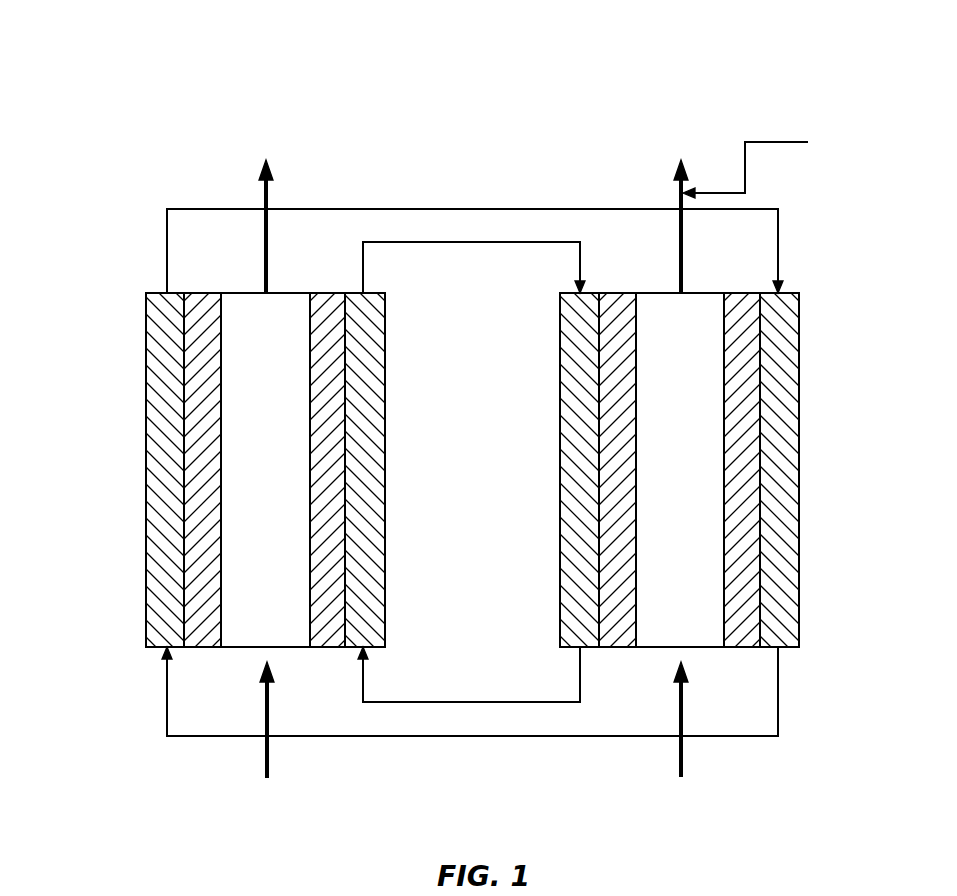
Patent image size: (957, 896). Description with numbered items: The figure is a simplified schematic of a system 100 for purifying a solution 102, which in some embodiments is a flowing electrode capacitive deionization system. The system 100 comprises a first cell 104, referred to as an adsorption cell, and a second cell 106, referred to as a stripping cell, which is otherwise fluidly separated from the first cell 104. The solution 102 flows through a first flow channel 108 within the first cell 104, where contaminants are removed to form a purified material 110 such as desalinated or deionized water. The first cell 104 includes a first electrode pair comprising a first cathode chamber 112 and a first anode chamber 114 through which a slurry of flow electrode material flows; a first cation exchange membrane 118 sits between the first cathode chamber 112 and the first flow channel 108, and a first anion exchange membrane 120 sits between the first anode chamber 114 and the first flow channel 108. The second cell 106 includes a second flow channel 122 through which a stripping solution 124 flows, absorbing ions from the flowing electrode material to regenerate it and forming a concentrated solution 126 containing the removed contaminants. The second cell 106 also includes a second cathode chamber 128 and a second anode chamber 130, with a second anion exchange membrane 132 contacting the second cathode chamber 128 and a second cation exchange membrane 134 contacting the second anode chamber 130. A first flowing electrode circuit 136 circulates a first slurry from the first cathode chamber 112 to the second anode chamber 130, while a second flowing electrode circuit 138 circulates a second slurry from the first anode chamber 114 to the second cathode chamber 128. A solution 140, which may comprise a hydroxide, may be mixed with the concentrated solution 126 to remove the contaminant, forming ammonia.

The system 100 is at (156, 112).
The solution 102 is at (265, 748).
The first cell 104 is at (146, 410).
The second cell 106 is at (799, 378).
The first flow channel 108 is at (284, 474).
The purified material 110 is at (265, 237).
The first cathode chamber 112 is at (168, 577).
The first anode chamber 114 is at (363, 545).
The first cation exchange membrane 118 is at (200, 345).
The first anion exchange membrane 120 is at (330, 343).
The second flow channel 122 is at (698, 474).
The stripping solution 124 is at (684, 748).
The concentrated solution 126 is at (684, 248).
The second cathode chamber 128 is at (580, 525).
The second anode chamber 130 is at (783, 587).
The second anion exchange membrane 132 is at (617, 425).
The second cation exchange membrane 134 is at (750, 512).
The first flowing electrode circuit 136 is at (393, 242).
The second flowing electrode circuit 138 is at (553, 207).
The solution 140 is at (783, 142).